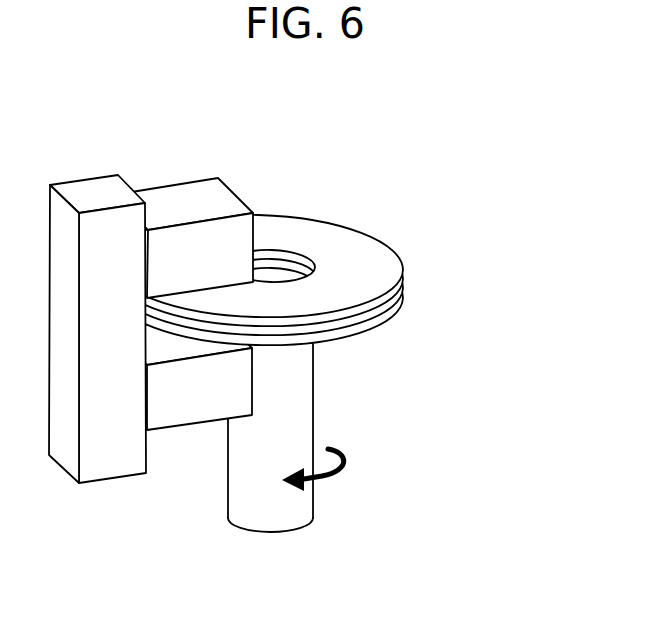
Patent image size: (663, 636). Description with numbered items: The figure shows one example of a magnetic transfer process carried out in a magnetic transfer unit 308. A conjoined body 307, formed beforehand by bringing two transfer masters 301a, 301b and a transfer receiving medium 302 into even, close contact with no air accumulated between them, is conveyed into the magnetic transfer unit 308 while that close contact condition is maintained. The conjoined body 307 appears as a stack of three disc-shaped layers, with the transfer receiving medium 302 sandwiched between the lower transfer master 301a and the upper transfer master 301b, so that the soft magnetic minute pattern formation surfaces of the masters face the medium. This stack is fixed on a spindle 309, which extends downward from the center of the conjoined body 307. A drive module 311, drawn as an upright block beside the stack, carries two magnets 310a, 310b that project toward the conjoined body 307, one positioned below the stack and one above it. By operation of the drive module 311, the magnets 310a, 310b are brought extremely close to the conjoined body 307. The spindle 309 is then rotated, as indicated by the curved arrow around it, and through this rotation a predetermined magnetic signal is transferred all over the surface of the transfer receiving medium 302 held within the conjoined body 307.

The magnetic transfer unit 308 is at (383, 178).
The conjoined body 307 is at (337, 280).
The transfer master 301a is at (390, 316).
The transfer master 301b is at (372, 246).
The transfer receiving medium 302 is at (402, 285).
The spindle 309 is at (305, 507).
The magnet 310a is at (200, 407).
The magnet 310b is at (167, 197).
The drive module 311 is at (115, 463).